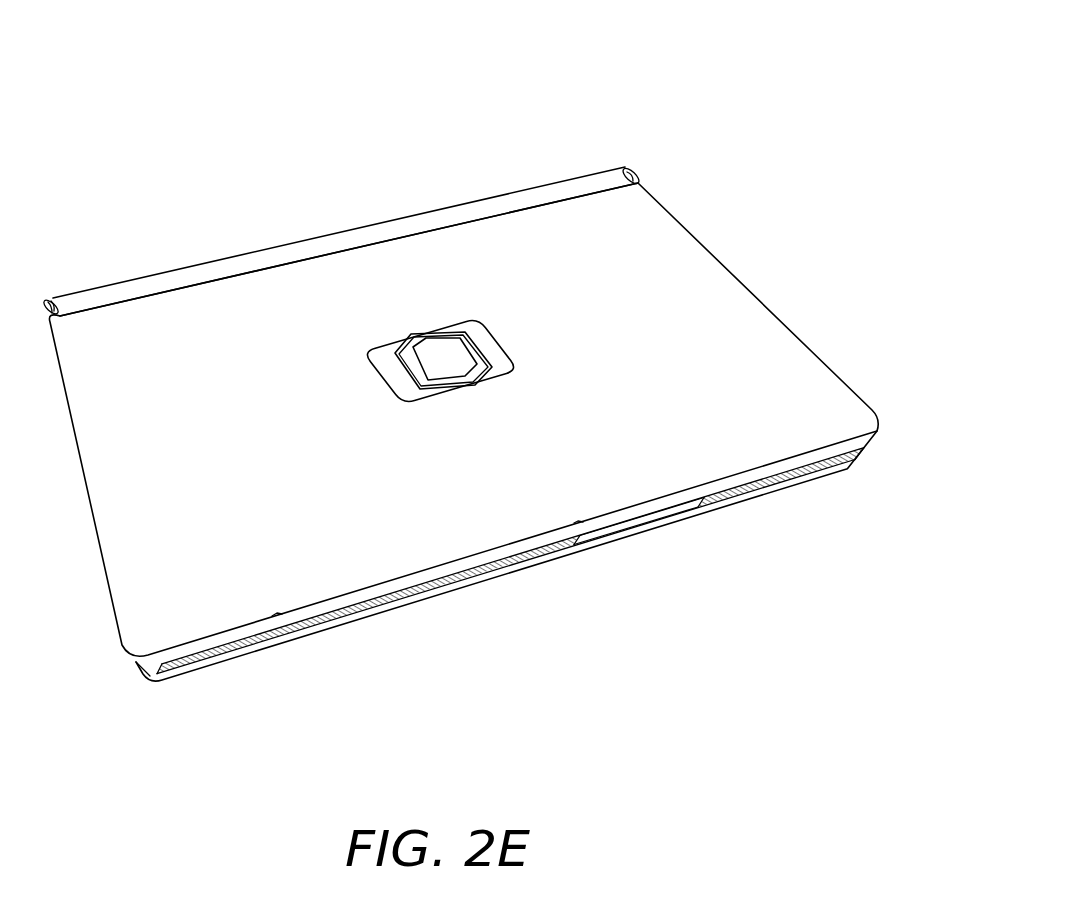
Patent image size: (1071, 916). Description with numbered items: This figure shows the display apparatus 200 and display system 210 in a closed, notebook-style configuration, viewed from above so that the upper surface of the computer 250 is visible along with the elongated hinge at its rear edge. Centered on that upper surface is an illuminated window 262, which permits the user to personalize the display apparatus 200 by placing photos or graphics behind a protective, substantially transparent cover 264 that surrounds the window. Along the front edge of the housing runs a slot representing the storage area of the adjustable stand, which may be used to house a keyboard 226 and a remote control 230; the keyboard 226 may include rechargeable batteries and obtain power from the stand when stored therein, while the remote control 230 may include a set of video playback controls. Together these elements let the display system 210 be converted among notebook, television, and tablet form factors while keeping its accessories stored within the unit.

The display apparatus 200 is at (640, 142).
The display system 210 is at (482, 353).
The computer 250 is at (732, 253).
The illuminated window 262 is at (458, 318).
The protective, substantially transparent cover 264 is at (503, 362).
The keyboard 226 is at (348, 616).
The remote control 230 is at (634, 523).